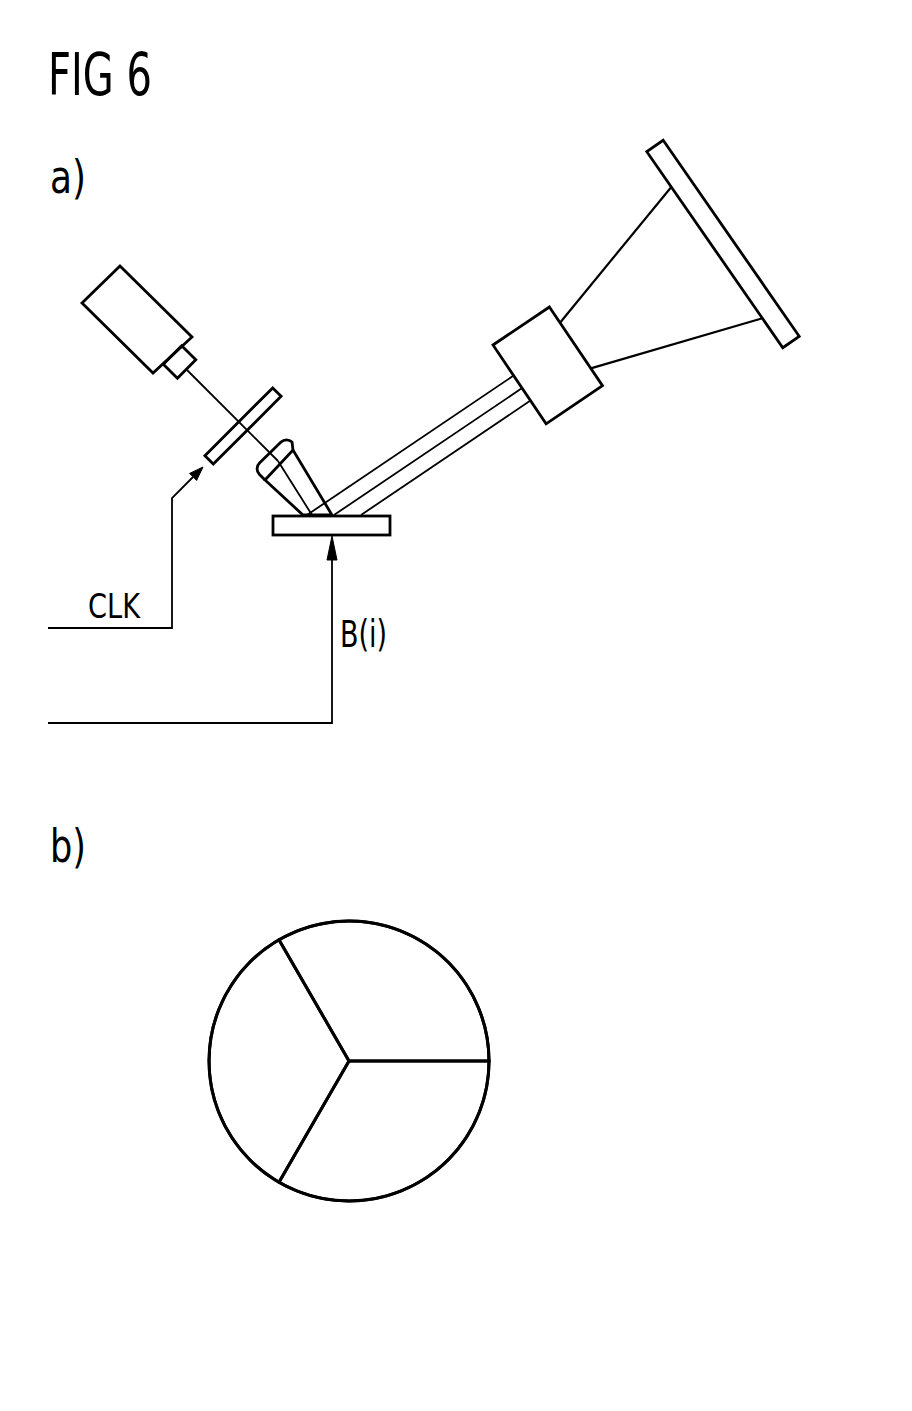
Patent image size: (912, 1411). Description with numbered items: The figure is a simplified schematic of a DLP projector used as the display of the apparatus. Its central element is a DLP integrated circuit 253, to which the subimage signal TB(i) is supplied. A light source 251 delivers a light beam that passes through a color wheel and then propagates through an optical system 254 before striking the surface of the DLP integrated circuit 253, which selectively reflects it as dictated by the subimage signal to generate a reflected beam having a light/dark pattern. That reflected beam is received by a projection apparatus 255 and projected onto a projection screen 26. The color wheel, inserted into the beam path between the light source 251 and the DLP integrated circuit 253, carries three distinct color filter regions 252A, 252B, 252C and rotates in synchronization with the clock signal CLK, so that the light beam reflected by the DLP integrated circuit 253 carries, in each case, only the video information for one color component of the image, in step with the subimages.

The projection screen 26 is at (733, 238).
The light source 251 is at (160, 302).
The color filter region 252A is at (440, 921).
The color filter region 252B is at (217, 1060).
The color filter region 252C is at (428, 1162).
The DLP integrated circuit 253 is at (390, 527).
The optical system 254 is at (312, 477).
The projection apparatus 255 is at (520, 323).